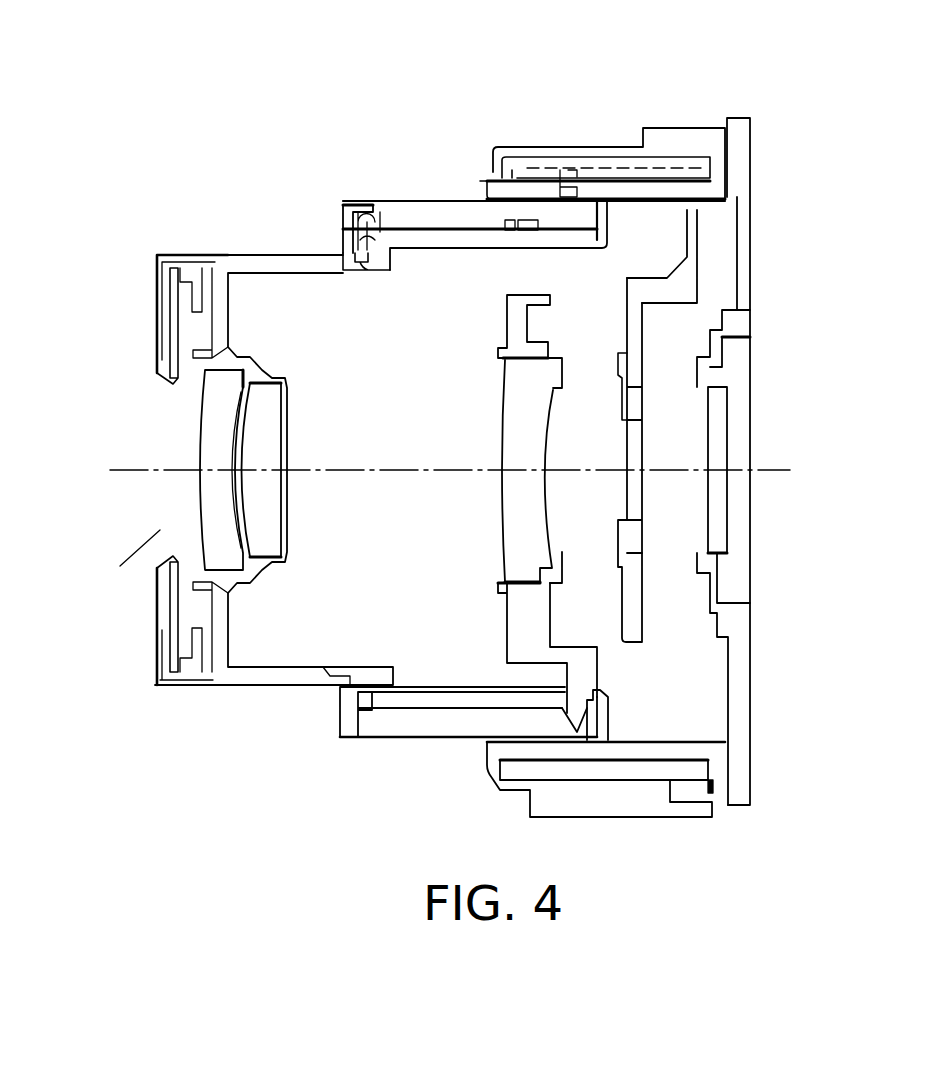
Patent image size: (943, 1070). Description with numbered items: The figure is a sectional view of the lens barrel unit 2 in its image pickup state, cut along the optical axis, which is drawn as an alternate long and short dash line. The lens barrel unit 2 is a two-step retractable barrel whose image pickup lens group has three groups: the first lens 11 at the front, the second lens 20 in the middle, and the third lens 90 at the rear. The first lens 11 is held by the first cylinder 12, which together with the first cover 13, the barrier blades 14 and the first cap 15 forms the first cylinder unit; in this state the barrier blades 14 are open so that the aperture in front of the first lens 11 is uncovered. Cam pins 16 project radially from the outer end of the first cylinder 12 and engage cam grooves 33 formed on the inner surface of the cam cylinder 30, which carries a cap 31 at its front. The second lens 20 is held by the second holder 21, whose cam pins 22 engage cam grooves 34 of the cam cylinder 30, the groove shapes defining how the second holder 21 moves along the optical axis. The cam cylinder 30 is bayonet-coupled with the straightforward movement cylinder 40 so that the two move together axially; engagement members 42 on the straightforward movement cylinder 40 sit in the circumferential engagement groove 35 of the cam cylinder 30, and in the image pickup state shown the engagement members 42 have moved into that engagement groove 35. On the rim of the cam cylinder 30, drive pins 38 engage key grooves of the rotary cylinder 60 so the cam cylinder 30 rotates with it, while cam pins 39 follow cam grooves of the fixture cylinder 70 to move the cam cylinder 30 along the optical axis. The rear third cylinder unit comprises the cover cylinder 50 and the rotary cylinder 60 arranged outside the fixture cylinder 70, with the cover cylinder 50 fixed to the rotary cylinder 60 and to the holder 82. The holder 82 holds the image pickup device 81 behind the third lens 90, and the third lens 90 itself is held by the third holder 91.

The lens barrel unit 2 is at (413, 36).
The first lens 11 is at (240, 440).
The first cylinder 12 is at (235, 258).
The first cover 13 is at (162, 322).
The barrier blades 14 is at (172, 376).
The first cap 15 is at (157, 262).
The cam pin 16 is at (372, 268).
The second lens 20 is at (508, 488).
The second holder 21 is at (508, 605).
The cam pin 22 is at (600, 714).
The cam cylinder 30 is at (400, 214).
The cap 31 is at (343, 218).
The cam groove 33 is at (350, 206).
The cam groove 34 is at (566, 711).
The engagement groove 35 is at (503, 222).
The drive pin 38 is at (548, 163).
The cam pin 39 is at (512, 151).
The straightforward movement cylinder 40 is at (438, 256).
The engagement member 42 is at (538, 226).
The cover cylinder 50 is at (680, 128).
The rotary cylinder 60 is at (580, 166).
The fixture cylinder 70 is at (560, 190).
The image pickup device 81 is at (730, 420).
The holder 82 is at (752, 250).
The third lens 90 is at (648, 507).
The third holder 91 is at (645, 628).